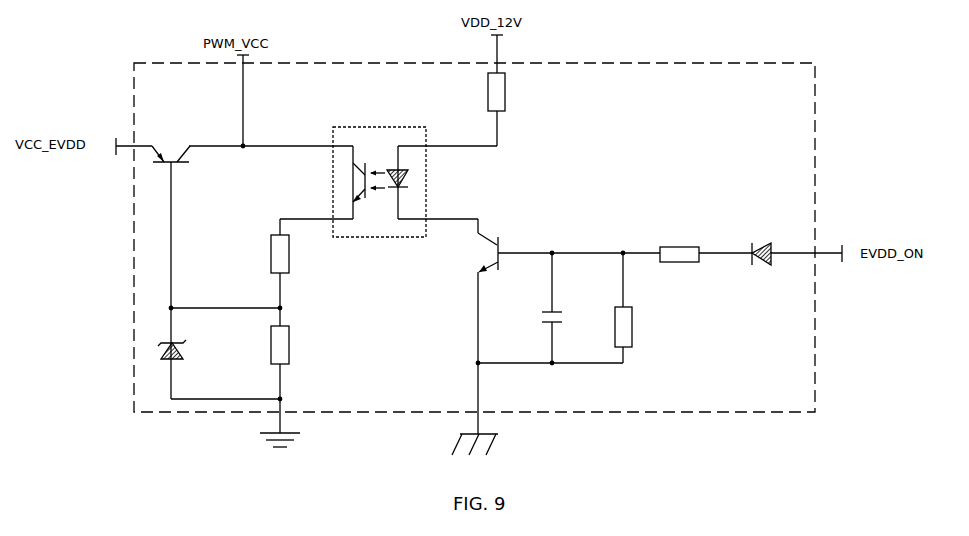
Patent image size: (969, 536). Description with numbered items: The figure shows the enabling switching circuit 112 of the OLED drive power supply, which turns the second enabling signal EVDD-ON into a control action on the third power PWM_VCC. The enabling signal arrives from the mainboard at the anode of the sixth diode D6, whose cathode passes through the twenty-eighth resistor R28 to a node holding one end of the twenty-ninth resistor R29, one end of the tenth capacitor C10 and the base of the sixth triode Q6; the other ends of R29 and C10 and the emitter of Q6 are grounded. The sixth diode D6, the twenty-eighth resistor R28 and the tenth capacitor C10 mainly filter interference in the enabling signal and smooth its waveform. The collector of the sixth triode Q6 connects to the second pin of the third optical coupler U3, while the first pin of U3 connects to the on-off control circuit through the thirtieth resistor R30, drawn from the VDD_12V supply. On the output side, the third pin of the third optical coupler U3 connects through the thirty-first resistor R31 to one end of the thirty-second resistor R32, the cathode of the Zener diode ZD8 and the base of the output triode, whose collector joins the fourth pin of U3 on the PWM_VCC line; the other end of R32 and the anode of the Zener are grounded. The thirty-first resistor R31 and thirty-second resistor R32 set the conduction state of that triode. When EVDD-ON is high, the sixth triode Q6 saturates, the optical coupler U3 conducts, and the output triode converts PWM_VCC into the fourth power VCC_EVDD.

The enabling switching circuit 112 is at (529, 237).
The third optical coupler U3 is at (388, 174).
The sixth triode Q6 is at (556, 326).
The twenty-eighth resistor R28 is at (706, 242).
The twenty-ninth resistor R29 is at (639, 308).
The thirtieth resistor R30 is at (513, 109).
The thirty-first resistor R31 is at (293, 263).
The thirty-second resistor R32 is at (293, 370).
The tenth capacitor C10 is at (567, 308).
The sixth diode D6 is at (797, 243).
The zener diode ZD8 is at (189, 351).